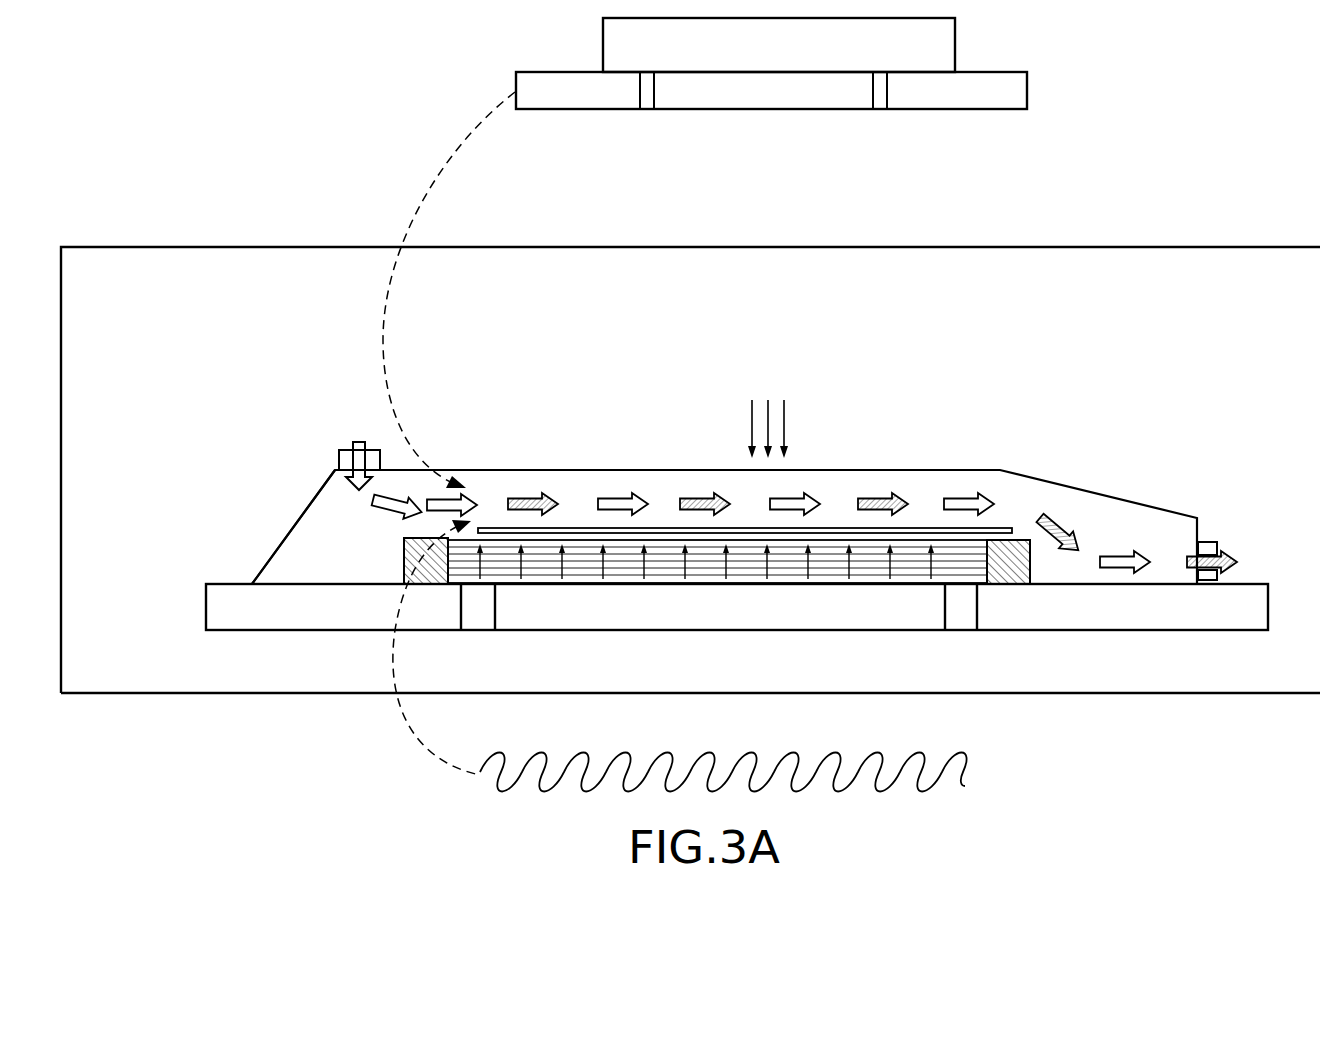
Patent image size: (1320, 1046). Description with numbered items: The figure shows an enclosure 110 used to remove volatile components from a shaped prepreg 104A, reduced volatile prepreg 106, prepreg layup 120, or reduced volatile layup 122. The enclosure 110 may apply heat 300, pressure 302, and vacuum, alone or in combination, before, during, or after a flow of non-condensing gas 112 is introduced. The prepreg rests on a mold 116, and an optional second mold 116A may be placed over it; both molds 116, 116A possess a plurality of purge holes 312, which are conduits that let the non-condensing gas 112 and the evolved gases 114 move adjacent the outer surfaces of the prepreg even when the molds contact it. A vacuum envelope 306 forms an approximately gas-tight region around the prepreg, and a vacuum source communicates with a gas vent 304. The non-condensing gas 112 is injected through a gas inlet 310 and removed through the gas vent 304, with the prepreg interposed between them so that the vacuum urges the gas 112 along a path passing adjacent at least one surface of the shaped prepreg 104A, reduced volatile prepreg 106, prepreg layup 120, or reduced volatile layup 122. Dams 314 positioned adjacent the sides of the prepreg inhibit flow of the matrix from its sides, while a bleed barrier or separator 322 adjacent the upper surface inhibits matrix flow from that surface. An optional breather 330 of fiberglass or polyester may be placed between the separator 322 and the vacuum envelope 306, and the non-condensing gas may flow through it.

The enclosure 110 is at (185, 246).
The heat 300 is at (70, 267).
The mold 116 is at (638, 632).
The optional second mold 116A is at (940, 53).
The vacuum envelope 306 is at (1085, 485).
The flow of non-condensing gas 112 is at (355, 440).
The gas inlet 310 is at (340, 462).
The gas vent 304 is at (1207, 542).
The evolved gases 114 is at (478, 562).
The bleed barrier or separator 322 is at (668, 527).
The pressure 302 is at (784, 410).
The shaped prepreg 104A is at (753, 471).
The reduced volatile prepreg 106 is at (753, 471).
The prepreg layup 120 is at (753, 471).
The reduced volatile layup 122 is at (912, 550).
The dam 314 is at (412, 545).
The purge holes 312 is at (645, 108).
The breather 330 is at (975, 770).